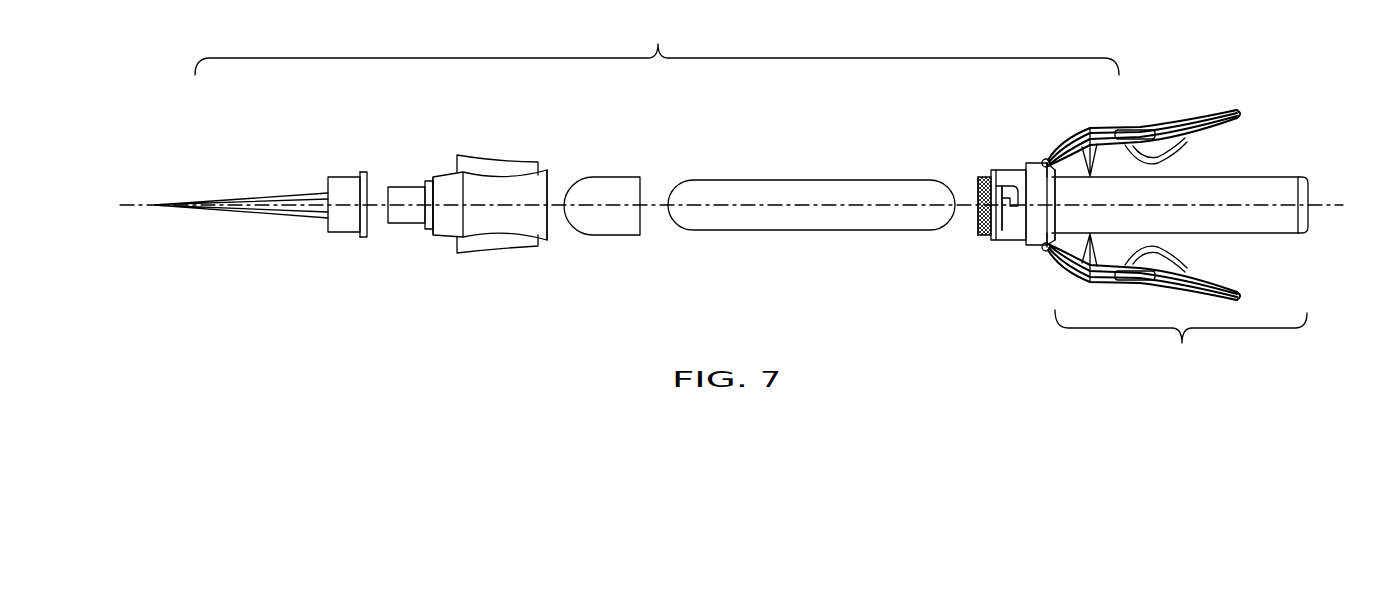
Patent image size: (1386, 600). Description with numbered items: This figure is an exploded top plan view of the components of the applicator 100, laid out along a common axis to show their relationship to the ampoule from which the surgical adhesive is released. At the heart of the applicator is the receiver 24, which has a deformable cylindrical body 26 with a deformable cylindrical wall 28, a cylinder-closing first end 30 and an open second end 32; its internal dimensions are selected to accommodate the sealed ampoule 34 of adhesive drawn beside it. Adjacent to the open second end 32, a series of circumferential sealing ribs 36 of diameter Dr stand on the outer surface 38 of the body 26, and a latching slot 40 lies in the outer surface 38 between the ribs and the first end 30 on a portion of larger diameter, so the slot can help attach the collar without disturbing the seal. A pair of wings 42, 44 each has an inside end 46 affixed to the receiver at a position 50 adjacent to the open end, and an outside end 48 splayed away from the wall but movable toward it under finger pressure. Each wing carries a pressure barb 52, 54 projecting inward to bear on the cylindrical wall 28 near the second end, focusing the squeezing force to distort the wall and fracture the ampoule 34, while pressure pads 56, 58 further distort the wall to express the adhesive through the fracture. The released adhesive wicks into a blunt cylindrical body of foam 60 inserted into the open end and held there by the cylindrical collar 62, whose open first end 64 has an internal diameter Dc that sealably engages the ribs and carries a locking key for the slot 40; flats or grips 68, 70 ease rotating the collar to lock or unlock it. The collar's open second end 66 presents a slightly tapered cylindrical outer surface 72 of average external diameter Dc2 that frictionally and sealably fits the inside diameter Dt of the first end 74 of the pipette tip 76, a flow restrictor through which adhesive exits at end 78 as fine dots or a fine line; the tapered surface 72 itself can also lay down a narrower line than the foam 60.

The applicator 100 is at (657, 44).
The receiver 24 is at (1191, 237).
The deformable cylindrical body 26 is at (1268, 188).
The deformable cylindrical wall 28 is at (1181, 343).
The first end 30 is at (1310, 190).
The open second end 32 is at (974, 196).
The sealed ampoule 34 is at (780, 186).
The circumferential sealing ribs 36 is at (992, 244).
The outer surface 38 is at (1000, 245).
The latching slot 40 is at (1000, 182).
The wing 42 is at (1160, 127).
The wing 44 is at (1115, 276).
The inside end 46 is at (1044, 160).
The outside end 48 is at (1238, 108).
The position 50 is at (1030, 250).
The pressure barb 52 is at (1088, 152).
The pressure barb 54 is at (1090, 258).
The pressure pad 56 is at (1187, 147).
The pressure pad 58 is at (1185, 262).
The blunt cylindrical body of foam 60 is at (628, 185).
The cylindrical collar 62 is at (522, 193).
The open first end 64 is at (547, 225).
The open second end 66 is at (390, 222).
The flat or grip 68 is at (510, 160).
The flat or grip 70 is at (508, 244).
The slightly tapered cylindrical outer surface 72 is at (428, 229).
The first end 74 is at (360, 232).
The pipette tip 76 is at (262, 232).
The end 78 is at (157, 208).
The inside diameter Dt is at (364, 195).
The internal diameter Dc is at (549, 186).
The average external diameter Dc2 is at (426, 190).
The diameter Dr is at (978, 224).